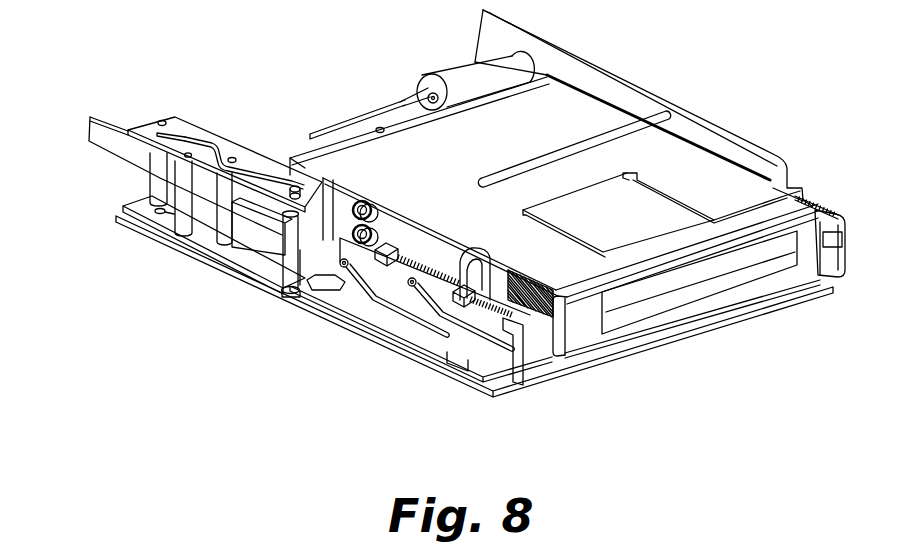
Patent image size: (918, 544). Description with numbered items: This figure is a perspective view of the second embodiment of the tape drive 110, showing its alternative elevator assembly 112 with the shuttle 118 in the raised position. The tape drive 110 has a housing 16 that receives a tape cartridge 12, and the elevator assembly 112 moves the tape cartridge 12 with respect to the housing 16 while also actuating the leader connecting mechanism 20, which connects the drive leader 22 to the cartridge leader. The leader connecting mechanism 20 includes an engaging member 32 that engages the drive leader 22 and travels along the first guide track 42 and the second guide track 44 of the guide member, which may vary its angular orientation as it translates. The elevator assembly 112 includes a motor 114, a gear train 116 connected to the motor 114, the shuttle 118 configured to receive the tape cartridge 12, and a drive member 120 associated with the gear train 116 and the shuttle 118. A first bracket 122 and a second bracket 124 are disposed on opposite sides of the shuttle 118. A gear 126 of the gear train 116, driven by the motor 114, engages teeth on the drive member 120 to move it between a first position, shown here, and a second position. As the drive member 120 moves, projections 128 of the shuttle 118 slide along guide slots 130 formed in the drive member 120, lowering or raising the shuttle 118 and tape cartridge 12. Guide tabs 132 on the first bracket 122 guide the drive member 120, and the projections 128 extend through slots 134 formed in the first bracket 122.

The tape cartridge 12 is at (587, 340).
The housing 16 is at (293, 307).
The leader connecting mechanism 20 is at (178, 205).
The drive leader 22 is at (110, 118).
The engaging member 32 is at (252, 227).
The first guide track 42 is at (203, 143).
The second guide track 44 is at (162, 213).
The tape drive 110 is at (432, 338).
The elevator assembly 112 is at (533, 373).
The motor 114 is at (463, 62).
The gear train 116 is at (583, 123).
The shuttle 118 is at (745, 195).
The drive member 120 is at (507, 372).
The first bracket 122 is at (358, 193).
The second bracket 124 is at (710, 117).
The gear 126 is at (372, 228).
The projections 128 is at (346, 267).
The guide slots 130 is at (392, 322).
The guide tabs 132 is at (395, 252).
The slots 134 is at (443, 263).